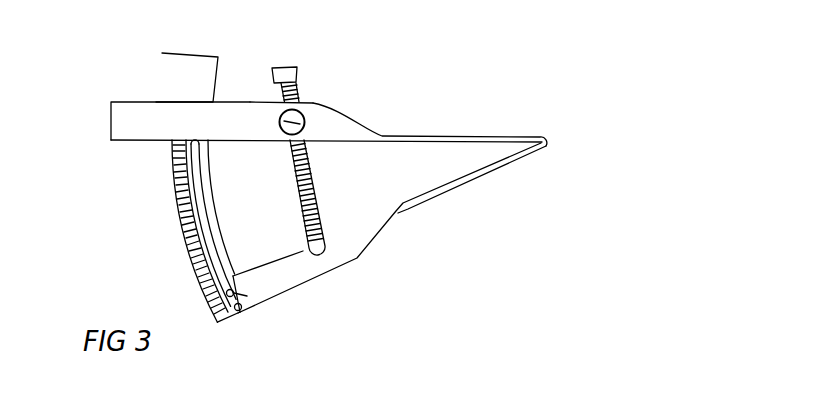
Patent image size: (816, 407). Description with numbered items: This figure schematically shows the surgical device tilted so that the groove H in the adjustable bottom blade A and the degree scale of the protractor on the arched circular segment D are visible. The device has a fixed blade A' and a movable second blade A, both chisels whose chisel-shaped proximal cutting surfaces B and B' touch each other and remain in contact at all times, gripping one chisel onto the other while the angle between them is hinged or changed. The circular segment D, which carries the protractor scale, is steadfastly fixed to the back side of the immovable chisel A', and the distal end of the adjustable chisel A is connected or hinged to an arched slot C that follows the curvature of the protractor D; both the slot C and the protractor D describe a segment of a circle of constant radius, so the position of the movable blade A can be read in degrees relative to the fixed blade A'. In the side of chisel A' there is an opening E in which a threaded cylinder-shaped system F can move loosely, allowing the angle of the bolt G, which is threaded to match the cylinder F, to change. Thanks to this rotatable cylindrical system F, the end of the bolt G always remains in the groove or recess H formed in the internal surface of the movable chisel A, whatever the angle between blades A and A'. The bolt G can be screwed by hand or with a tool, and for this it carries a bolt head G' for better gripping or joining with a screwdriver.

The adjustable blade A is at (406, 144).
The fixed blade A' is at (517, 150).
The cutting surface B is at (407, 144).
The cutting surface B' is at (470, 222).
The arched slot C is at (193, 173).
The circular segment D is at (235, 277).
The opening E is at (300, 107).
The threaded cylinder F is at (305, 119).
The bolt G is at (485, 206).
The bolt head G' is at (447, 58).
The groove H is at (303, 251).